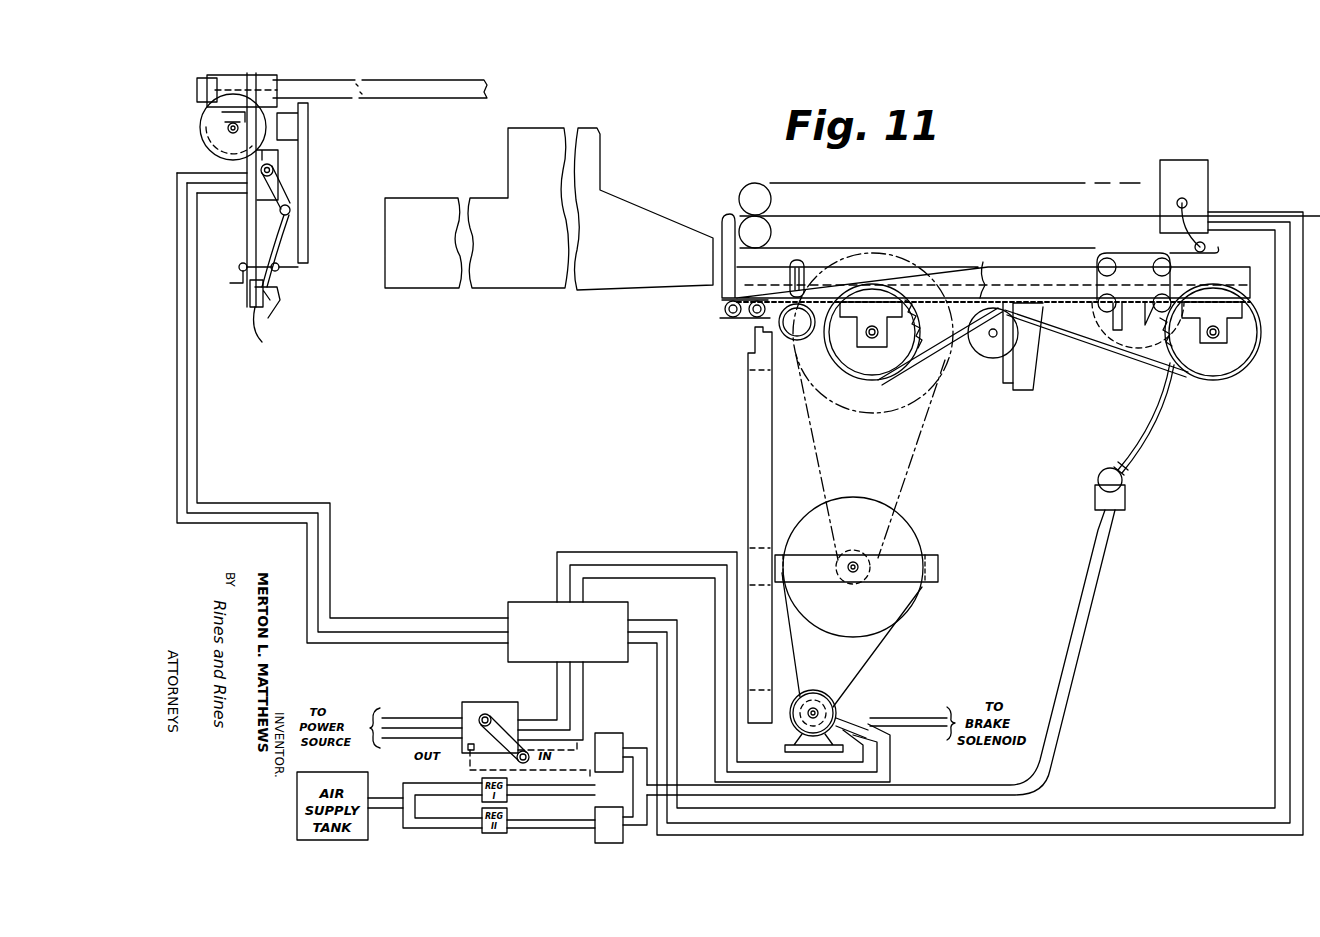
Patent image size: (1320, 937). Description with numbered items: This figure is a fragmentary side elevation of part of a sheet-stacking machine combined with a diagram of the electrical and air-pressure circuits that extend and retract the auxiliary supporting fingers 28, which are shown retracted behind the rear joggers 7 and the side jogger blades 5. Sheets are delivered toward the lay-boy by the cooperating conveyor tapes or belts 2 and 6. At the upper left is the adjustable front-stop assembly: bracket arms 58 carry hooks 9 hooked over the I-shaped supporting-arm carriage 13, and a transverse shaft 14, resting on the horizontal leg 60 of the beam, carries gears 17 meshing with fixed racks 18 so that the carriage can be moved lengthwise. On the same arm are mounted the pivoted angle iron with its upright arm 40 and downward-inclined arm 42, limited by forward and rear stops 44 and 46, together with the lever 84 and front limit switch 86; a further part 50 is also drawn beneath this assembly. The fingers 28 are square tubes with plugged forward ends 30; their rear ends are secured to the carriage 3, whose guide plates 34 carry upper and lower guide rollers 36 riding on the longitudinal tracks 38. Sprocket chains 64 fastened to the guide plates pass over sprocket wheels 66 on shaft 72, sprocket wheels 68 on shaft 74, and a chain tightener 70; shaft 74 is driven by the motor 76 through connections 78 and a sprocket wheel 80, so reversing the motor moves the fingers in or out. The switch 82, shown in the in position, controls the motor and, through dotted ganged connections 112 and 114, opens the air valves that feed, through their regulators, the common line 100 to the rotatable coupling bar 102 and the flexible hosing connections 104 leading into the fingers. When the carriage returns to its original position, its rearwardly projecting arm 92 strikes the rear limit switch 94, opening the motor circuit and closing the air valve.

The conveyor tapes or belts 2 is at (955, 248).
The carriage 3 is at (1160, 322).
The side jogger blades 5 is at (626, 210).
The conveyor tapes or belts 6 is at (962, 184).
The rear joggers 7 is at (724, 220).
The hooks 9 is at (232, 98).
The supporting-arm carriage 13 is at (256, 96).
The shaft 14 is at (226, 134).
The gears 17 is at (205, 118).
The racks 18 is at (386, 90).
The supporting fingers 28 is at (1060, 332).
The plugged forward free ends 30 is at (725, 308).
The guide plates 34 is at (1106, 260).
The guide rollers 36 is at (1108, 305).
The tracks 38 is at (1133, 262).
The upper arm 40 is at (258, 268).
The horizontal arm 42 is at (274, 305).
The forward stop 44 is at (282, 268).
The rear stop 46 is at (240, 270).
The spring wire 50 is at (258, 338).
The bracket arms 58 is at (273, 167).
The horizontal leg 60 is at (215, 148).
The sprocket chains 64 is at (1118, 342).
The sprocket wheels 66 is at (1232, 362).
The sprocket wheels 68 is at (874, 348).
The sprocket-chain tightener 70 is at (995, 340).
The shaft 72 is at (1212, 340).
The shaft 74 is at (806, 340).
The motor 76 is at (838, 712).
The connections 78 is at (905, 450).
The sprocket wheel 80 is at (806, 392).
The switch 82 is at (495, 712).
The lever 84 is at (286, 234).
The front limit switch 86 is at (289, 196).
The arm 92 is at (1155, 252).
The rear limit switch 94 is at (1187, 206).
The common delivery connection 100 is at (1062, 712).
The rotatable-joint coupling bar 102 is at (1124, 490).
The flexible hosing connections 104 is at (1142, 447).
The ganged connection 112 is at (560, 776).
The ganged connection 114 is at (582, 740).